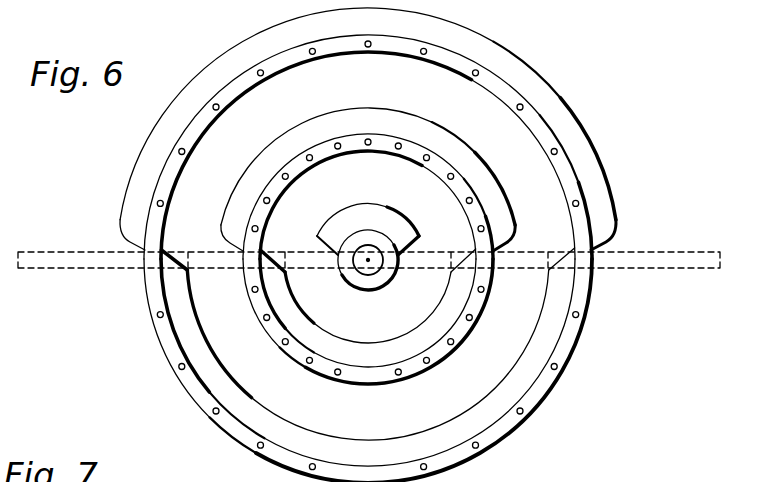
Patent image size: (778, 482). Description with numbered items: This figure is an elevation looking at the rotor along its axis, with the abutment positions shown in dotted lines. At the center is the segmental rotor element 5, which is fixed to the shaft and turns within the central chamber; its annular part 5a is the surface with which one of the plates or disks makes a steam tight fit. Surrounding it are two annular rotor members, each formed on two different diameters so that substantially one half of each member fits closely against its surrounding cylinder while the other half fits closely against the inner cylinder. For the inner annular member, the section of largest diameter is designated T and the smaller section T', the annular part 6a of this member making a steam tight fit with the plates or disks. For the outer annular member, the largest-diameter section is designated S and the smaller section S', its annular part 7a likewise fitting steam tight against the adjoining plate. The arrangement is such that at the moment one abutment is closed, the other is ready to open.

The section of largest diameter of member 7 S is at (368, 133).
The smaller section of member 7 S' is at (367, 360).
The section of largest diameter of member 6 T is at (368, 183).
The smaller section of member 6 T' is at (368, 312).
The segmental rotor element 5 is at (368, 239).
The annular part of rotor member 5 5a is at (390, 279).
The annular part of rotor member 6 6a is at (473, 333).
The annular part of rotor member 7 7a is at (560, 378).